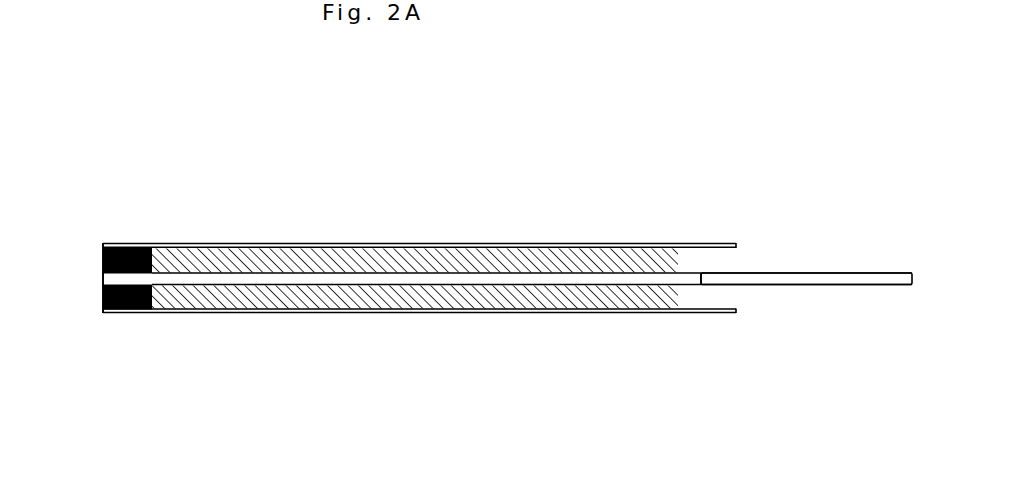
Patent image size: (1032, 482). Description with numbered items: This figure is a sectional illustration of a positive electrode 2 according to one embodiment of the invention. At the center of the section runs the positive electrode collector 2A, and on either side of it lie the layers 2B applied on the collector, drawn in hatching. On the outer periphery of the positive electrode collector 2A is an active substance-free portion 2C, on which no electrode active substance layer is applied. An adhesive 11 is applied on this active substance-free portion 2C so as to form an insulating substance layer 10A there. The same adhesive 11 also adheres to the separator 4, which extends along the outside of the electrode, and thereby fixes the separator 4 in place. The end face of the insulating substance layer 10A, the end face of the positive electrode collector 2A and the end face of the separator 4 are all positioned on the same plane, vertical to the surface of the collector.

The positive electrode 2 is at (469, 256).
The positive electrode collector 2A is at (545, 282).
The cladding 2B is at (450, 267).
The active substance-free portion 2C is at (143, 307).
The separator 4 is at (345, 242).
The insulating substance layer 10A is at (127, 243).
The adhesive 11 is at (103, 258).